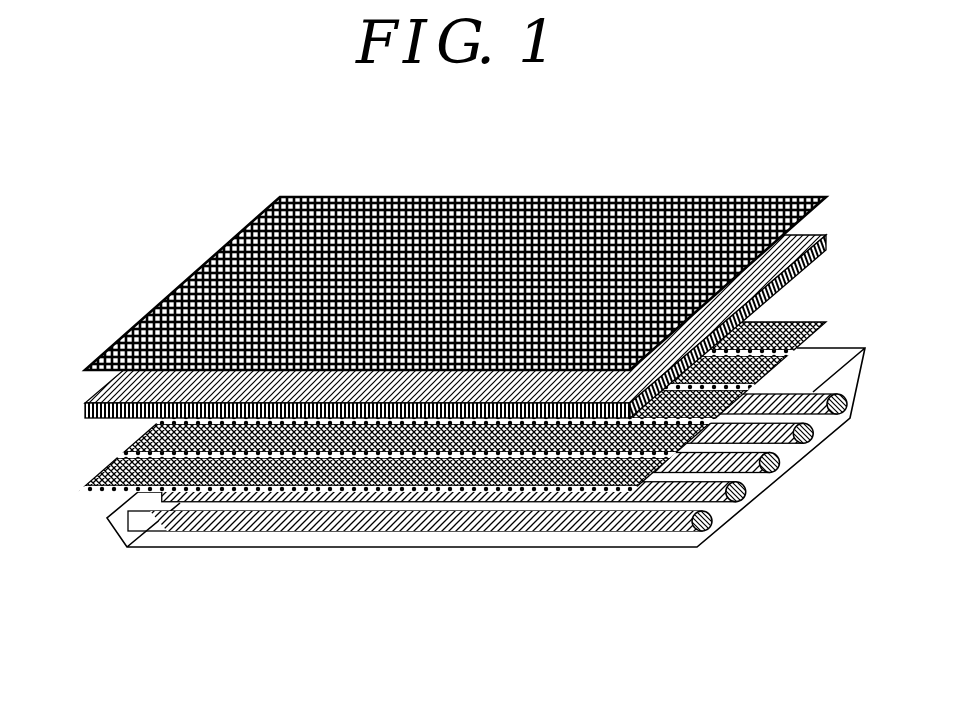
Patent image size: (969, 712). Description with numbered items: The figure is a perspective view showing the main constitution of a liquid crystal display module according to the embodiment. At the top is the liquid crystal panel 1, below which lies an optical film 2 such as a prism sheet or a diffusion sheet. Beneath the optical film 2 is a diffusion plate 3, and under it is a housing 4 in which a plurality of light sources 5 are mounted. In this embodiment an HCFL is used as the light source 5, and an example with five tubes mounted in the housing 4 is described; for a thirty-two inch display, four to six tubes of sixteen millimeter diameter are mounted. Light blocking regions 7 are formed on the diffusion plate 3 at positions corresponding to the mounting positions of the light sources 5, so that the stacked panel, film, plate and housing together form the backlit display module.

The liquid crystal panel 1 is at (425, 196).
The optical film 2 is at (833, 233).
The diffusion plate 3 is at (380, 488).
The housing 4 is at (490, 548).
The light source 5 is at (588, 533).
The light blocking regions 7 is at (126, 466).